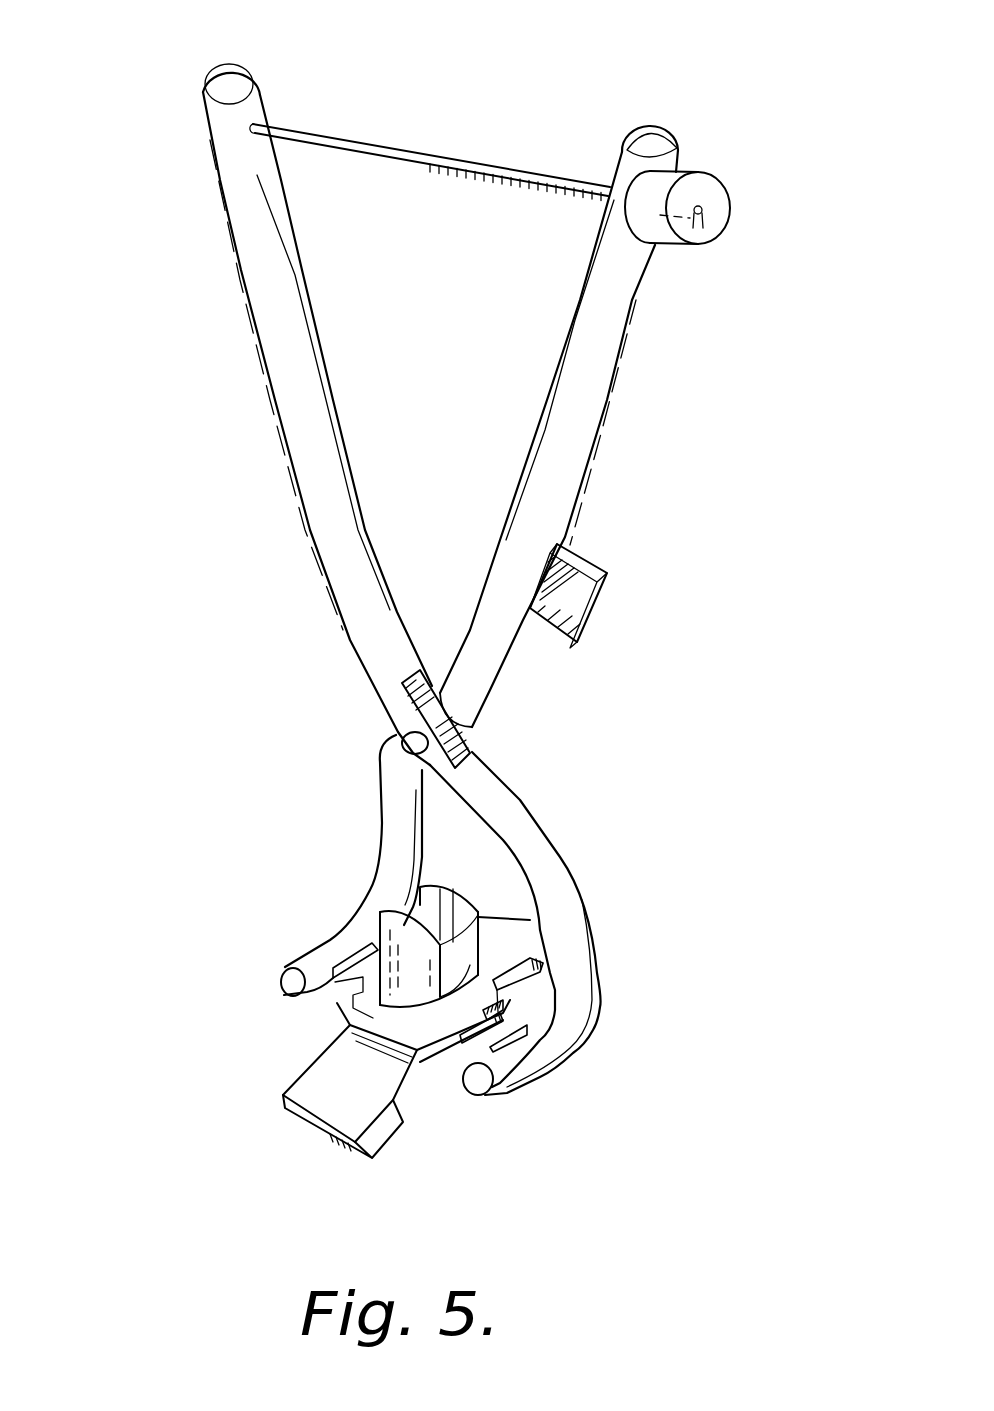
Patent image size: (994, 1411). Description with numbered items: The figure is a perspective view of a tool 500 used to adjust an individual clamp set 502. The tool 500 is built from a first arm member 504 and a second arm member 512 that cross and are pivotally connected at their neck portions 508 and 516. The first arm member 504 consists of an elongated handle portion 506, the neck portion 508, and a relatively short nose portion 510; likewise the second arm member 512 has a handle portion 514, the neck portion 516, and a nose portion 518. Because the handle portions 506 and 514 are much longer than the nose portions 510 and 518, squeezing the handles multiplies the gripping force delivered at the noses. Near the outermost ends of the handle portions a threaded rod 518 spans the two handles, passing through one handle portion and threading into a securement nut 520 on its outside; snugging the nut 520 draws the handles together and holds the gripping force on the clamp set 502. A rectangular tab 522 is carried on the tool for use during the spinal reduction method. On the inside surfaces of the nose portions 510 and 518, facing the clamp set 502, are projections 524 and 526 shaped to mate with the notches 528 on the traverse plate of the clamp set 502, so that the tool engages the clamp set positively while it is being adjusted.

The tool 500 is at (674, 50).
The clamp set 502 is at (283, 1142).
The first arm member 504 is at (672, 140).
The handle portion 506 is at (641, 300).
The neck portion 508 is at (470, 740).
The nose portion 510 is at (387, 830).
The second arm member 512 is at (205, 76).
The handle portion 514 is at (245, 298).
The neck portion 516 is at (395, 736).
The nose portion / threaded rod 518 is at (485, 165).
The securement nut 520 is at (712, 192).
The rectangular tab 522 is at (597, 608).
The projection 524 is at (352, 985).
The projection 526 is at (487, 1035).
The notches 528 is at (457, 1040).